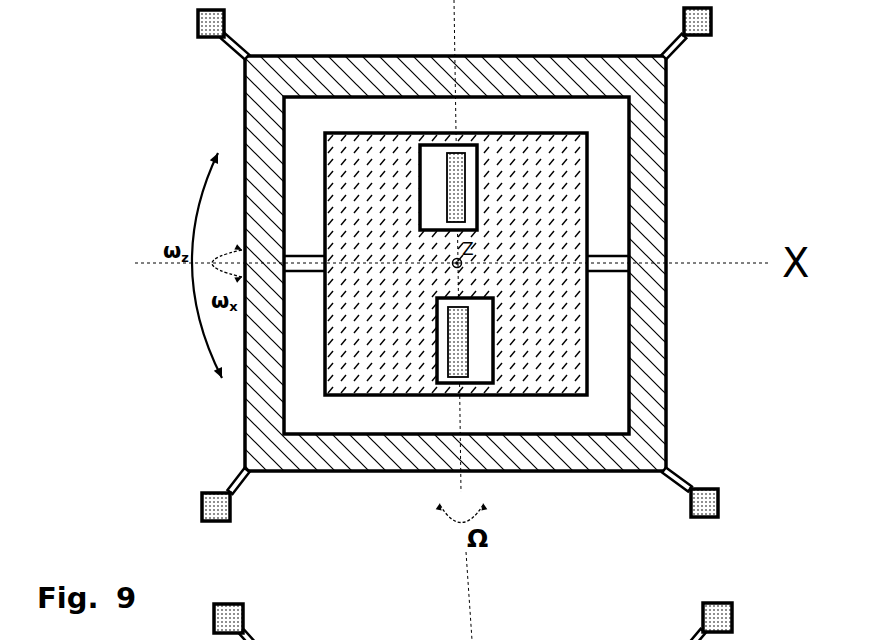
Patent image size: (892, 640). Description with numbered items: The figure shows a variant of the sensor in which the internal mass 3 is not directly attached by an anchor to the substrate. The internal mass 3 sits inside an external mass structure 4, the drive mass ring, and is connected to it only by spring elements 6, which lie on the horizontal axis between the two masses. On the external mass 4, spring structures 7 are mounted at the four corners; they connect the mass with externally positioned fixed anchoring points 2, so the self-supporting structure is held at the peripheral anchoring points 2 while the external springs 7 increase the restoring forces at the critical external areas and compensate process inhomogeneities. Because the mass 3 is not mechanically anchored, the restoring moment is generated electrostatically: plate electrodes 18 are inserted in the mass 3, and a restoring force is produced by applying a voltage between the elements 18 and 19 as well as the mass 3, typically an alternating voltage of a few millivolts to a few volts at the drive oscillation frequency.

The fixed anchoring point 2 is at (227, 16).
The internal mass 3 is at (588, 168).
The external mass structure 4 is at (669, 420).
The spring structure 6 is at (607, 272).
The spring structure 7 is at (240, 41).
The plate electrode 18 is at (462, 143).
The electrode element 19 is at (472, 168).